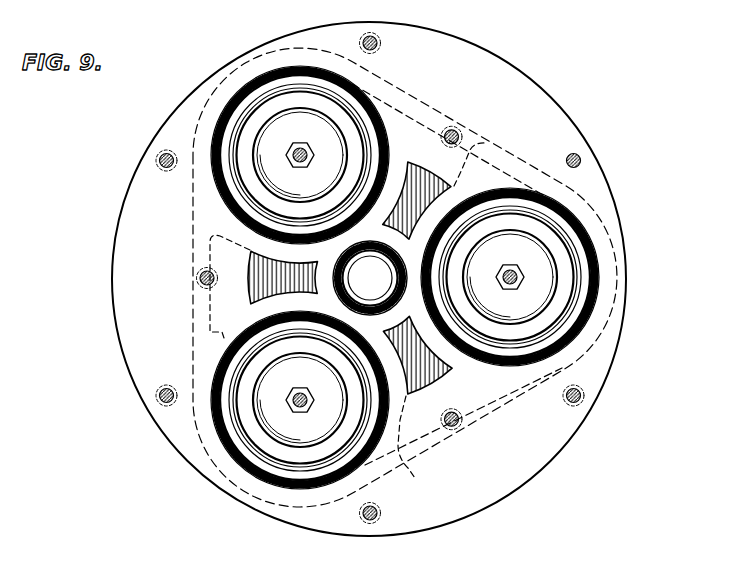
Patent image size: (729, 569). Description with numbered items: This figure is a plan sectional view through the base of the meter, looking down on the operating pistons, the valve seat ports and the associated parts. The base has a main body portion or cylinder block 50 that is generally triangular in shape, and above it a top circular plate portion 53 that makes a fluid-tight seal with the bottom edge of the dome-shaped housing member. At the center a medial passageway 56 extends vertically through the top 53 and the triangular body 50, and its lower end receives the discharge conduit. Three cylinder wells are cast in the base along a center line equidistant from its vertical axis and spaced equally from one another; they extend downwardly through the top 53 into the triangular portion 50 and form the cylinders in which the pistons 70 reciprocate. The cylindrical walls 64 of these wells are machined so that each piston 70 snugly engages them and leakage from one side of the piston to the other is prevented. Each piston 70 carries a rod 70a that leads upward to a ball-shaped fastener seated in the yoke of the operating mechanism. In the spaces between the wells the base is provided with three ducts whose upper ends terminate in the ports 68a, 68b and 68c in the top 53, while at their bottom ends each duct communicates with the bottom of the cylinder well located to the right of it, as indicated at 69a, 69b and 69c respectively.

The cylinder block 50 is at (483, 415).
The top circular plate portion 53 is at (487, 466).
The medial passageway 56 is at (370, 278).
The cylindrical walls 64 is at (244, 97).
The port 68a is at (441, 378).
The port 68b is at (252, 271).
The port 68c is at (417, 178).
The duct communication with cylinder well bottom 69a is at (463, 436).
The duct communication with cylinder well bottom 69b is at (210, 333).
The duct communication with cylinder well bottom 69c is at (487, 143).
The piston 70 is at (249, 131).
The piston rod 70a is at (300, 150).